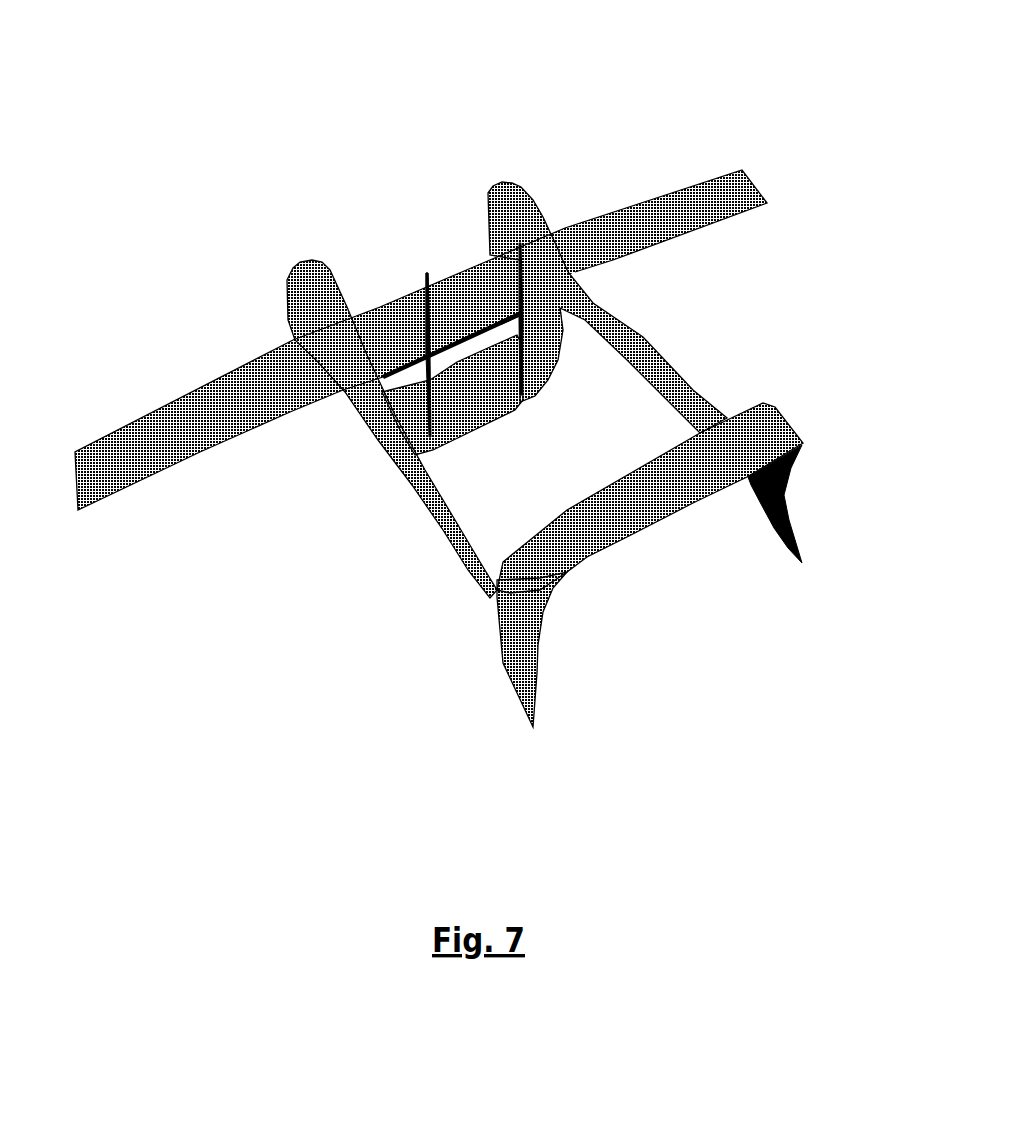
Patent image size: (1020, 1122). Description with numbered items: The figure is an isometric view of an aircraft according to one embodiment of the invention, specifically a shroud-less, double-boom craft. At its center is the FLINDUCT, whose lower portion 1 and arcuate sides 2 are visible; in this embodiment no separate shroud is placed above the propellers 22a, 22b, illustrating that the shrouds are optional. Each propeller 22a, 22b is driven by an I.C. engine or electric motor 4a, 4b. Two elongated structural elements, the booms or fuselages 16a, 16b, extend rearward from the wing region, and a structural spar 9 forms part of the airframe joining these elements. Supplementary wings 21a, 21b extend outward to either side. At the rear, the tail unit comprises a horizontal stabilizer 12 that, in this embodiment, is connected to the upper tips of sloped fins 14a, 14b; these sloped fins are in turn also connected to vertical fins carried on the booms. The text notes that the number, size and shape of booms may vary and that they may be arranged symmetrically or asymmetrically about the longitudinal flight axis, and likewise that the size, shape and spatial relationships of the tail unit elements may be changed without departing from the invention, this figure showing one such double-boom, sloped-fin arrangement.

The lower portion of the FLINDUCT 1 is at (460, 405).
The arcuate sides of the FLINDUCT 2 is at (538, 364).
The I.C. engine/electric motor 4a is at (513, 307).
The I.C. engine/electric motor 4b is at (427, 318).
The structural element, spar 9 is at (450, 292).
The horizontal stabilizer 12 is at (687, 474).
The sloped fin 14a is at (790, 477).
The sloped fin 14b is at (550, 590).
The elongated structural element, boom, fuselage 16a is at (521, 216).
The elongated structural element, boom, fuselage 16b is at (315, 293).
The supplementary wing 21a is at (634, 215).
The supplementary wing 21b is at (185, 415).
The propeller 22a is at (522, 273).
The propeller 22b is at (422, 350).